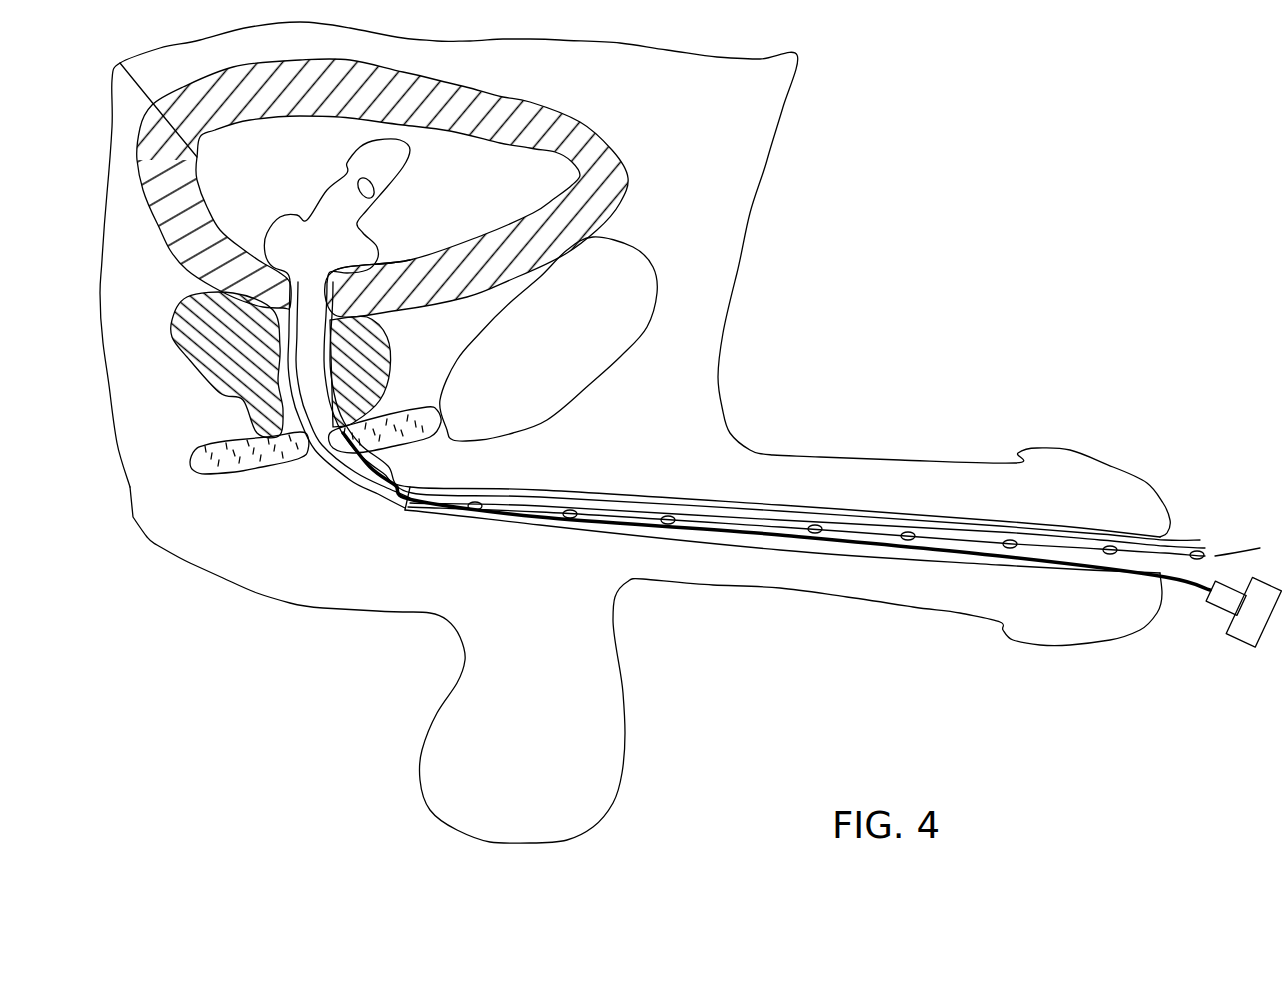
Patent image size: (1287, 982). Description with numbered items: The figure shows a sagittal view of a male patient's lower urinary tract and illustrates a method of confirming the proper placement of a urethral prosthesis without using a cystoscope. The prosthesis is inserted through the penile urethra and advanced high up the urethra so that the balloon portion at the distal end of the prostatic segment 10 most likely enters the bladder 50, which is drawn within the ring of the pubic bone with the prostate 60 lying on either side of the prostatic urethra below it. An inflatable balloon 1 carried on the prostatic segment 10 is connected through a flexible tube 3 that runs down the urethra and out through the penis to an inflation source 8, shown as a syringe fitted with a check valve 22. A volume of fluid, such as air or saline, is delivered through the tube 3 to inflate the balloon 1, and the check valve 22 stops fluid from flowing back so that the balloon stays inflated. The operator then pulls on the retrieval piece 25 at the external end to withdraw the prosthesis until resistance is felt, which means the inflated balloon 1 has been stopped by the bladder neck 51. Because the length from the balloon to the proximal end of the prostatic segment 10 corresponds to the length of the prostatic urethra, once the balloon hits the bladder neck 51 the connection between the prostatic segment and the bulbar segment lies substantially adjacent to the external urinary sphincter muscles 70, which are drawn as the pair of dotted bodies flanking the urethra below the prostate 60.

The inflatable balloon 1 is at (292, 228).
The tube 3 is at (1177, 588).
The inflation source 8 is at (1262, 628).
The prostatic segment 10 is at (300, 348).
The check valve 22 is at (1238, 640).
The retrieval piece 25 is at (1227, 553).
The bladder 50 is at (553, 113).
The bladder neck 51 is at (340, 297).
The prostate 60 is at (197, 310).
The external urinary sphincter 70 is at (208, 450).